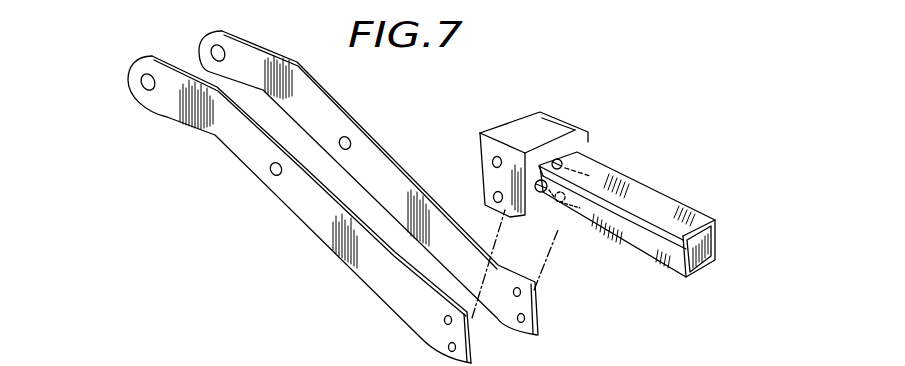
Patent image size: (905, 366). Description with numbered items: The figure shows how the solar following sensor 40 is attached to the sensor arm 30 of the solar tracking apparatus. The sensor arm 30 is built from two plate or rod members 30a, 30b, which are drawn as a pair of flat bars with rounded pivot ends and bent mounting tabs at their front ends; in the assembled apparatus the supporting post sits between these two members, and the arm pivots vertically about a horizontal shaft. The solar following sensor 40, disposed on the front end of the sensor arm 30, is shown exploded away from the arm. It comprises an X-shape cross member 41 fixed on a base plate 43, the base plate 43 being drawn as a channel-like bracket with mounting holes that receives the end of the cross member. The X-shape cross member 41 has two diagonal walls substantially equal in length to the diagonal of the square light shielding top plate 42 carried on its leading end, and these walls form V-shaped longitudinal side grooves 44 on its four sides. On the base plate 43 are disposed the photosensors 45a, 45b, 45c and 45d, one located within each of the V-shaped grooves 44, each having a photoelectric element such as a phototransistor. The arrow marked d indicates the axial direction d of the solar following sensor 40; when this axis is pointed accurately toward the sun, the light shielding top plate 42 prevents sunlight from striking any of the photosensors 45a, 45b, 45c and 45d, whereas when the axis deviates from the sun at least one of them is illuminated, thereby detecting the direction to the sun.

The sensor arm 30 is at (302, 333).
The plate or rod member 30a is at (398, 197).
The plate or rod member 30b is at (325, 220).
The solar following sensor 40 is at (723, 222).
The X-shape cross member 41 is at (645, 185).
The light shielding top plate 42 is at (700, 270).
The base plate 43 is at (551, 113).
The V-shaped longitudinal side groove 44 is at (676, 212).
The photosensor 45a is at (545, 213).
The photosensor 45b is at (566, 162).
The photosensor 45c is at (568, 128).
The photosensor 45d is at (568, 193).
The axial direction d is at (717, 258).